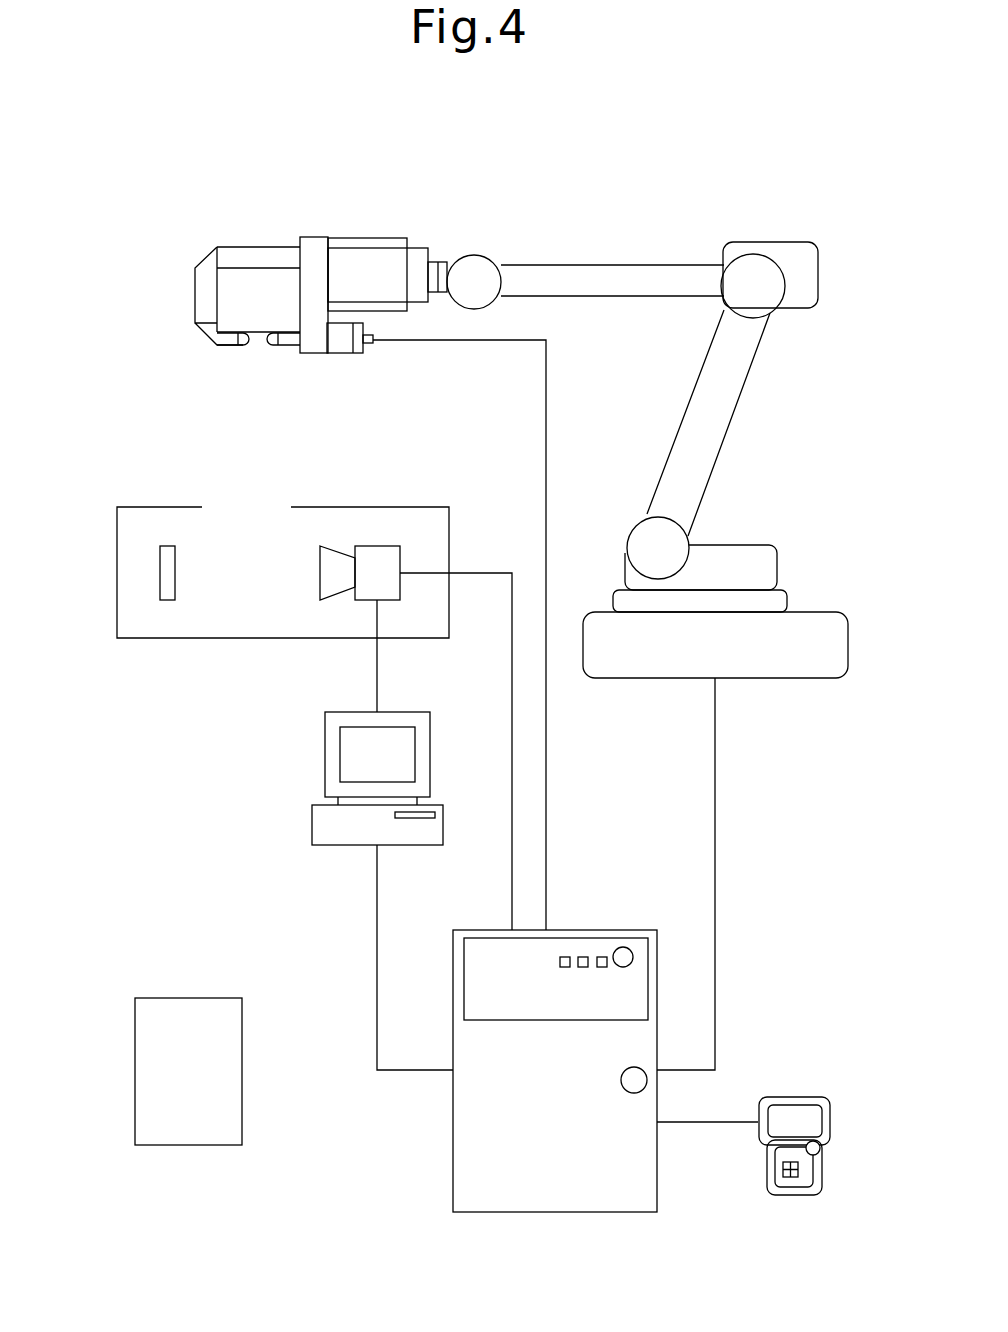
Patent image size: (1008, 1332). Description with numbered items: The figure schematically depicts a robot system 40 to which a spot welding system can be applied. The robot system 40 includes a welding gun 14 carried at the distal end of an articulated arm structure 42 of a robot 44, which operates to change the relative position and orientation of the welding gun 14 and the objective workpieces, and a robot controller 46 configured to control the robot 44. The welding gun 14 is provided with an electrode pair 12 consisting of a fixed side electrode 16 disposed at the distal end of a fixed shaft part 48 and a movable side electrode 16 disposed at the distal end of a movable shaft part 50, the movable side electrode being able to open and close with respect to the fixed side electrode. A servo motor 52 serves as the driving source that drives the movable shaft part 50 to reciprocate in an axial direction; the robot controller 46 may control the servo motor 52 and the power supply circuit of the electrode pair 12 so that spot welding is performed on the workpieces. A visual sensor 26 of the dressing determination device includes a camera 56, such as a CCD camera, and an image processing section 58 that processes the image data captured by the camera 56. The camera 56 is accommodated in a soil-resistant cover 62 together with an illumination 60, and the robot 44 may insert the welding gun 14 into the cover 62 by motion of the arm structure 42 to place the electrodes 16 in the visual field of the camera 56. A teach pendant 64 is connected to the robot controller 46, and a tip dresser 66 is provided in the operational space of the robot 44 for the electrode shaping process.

The robot system 40 is at (295, 277).
The welding gun 14 is at (277, 240).
The fixed shaft part 48 is at (222, 350).
The electrode 16 is at (266, 407).
The electrode pair 12 is at (246, 393).
The movable shaft part 50 is at (290, 348).
The servo motor 52 is at (343, 345).
The articulated arm structure 42 is at (623, 277).
The robot 44 is at (779, 234).
The robot controller 46 is at (446, 1163).
The camera 56 is at (362, 602).
The image processing section 58 is at (247, 727).
The visual sensor 26 is at (355, 808).
The illumination 60 is at (158, 584).
The soil-resistant cover 62 is at (132, 640).
The teach pendant 64 is at (792, 1097).
The tip dresser 66 is at (135, 1020).